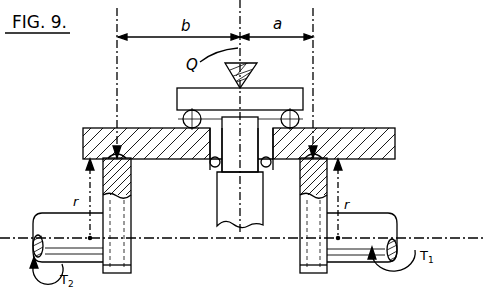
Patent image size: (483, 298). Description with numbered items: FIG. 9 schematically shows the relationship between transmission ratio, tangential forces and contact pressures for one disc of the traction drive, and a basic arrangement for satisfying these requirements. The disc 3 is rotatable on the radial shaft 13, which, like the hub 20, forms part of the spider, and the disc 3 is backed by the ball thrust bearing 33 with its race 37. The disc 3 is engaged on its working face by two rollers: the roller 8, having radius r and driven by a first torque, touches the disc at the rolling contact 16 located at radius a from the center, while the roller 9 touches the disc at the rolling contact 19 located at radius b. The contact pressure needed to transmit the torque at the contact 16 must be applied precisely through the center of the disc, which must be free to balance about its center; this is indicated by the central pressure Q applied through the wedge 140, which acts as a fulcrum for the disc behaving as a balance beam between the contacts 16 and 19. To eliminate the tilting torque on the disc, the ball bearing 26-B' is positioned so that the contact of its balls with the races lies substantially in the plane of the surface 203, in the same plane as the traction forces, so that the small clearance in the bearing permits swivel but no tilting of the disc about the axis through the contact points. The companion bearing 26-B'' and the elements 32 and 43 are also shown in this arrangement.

The disc 3 is at (331, 123).
The roller 8 is at (333, 180).
The roller 9 is at (131, 185).
The radial shaft 13 is at (249, 166).
The rolling contact 16 is at (346, 126).
The rolling contact 19 is at (117, 155).
The hub 20 is at (228, 217).
The pin axis 32 is at (115, 120).
The ball thrust bearing 33 is at (314, 118).
The race 37 is at (268, 100).
The pin contact 43 is at (316, 118).
The wedge 140 is at (255, 74).
The surface 203 is at (208, 164).
The ball bearing 26-B' is at (191, 185).
The roller 26-B'' is at (180, 122).